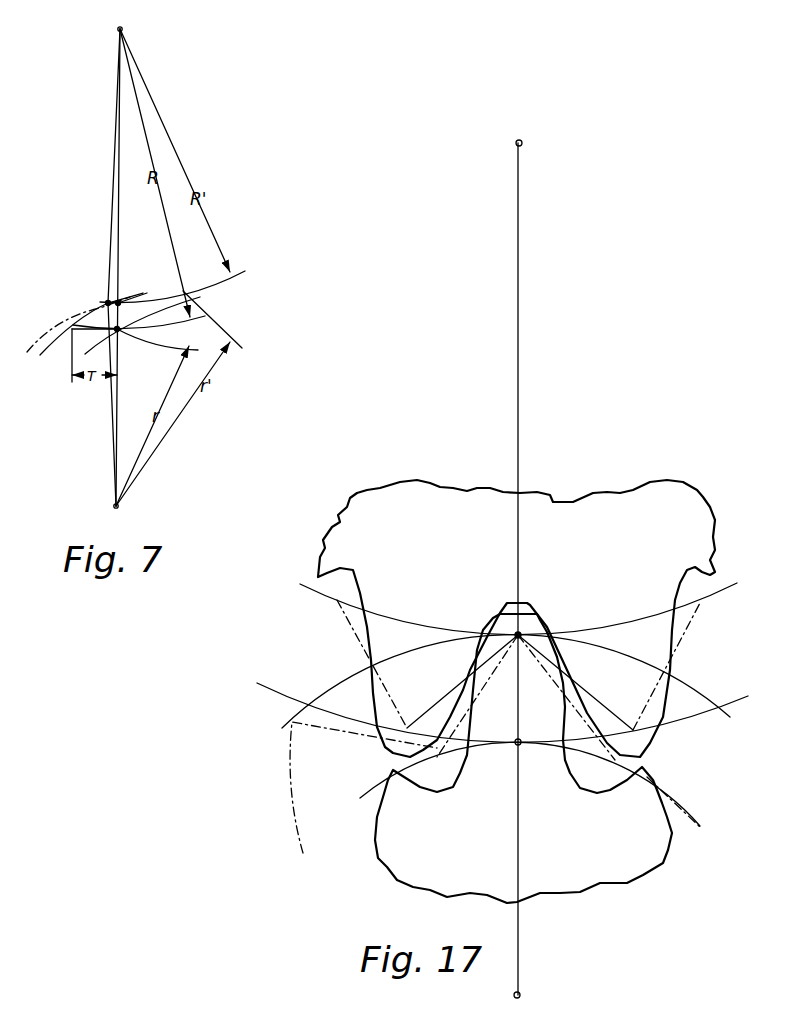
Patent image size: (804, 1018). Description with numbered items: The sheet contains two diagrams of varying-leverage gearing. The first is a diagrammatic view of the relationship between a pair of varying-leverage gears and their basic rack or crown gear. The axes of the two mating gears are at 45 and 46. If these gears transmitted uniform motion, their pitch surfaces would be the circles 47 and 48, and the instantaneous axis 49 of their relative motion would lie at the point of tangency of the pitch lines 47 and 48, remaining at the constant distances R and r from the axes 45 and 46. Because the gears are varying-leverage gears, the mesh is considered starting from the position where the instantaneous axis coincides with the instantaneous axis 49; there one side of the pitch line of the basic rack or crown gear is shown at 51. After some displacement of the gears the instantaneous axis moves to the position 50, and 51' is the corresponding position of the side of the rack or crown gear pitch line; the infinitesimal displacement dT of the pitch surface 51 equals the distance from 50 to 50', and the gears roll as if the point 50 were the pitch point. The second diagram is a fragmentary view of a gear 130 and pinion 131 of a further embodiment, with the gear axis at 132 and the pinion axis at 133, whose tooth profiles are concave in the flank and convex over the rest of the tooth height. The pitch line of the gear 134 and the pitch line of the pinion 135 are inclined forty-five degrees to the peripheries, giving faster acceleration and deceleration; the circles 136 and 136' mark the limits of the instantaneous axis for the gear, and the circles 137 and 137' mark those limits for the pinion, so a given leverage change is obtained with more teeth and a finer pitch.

In FIG. 7, the axis of mating gear 45 is at (117, 29).
In FIG. 7, the axis of mating gear 46 is at (118, 506).
In FIG. 7, the pitch surface 47 is at (207, 317).
In FIG. 7, the pitch surface 48 is at (163, 336).
In FIG. 7, the instantaneous axis 49 is at (117, 329).
In FIG. 7, the instantaneous axis position 50 is at (134, 284).
In FIG. 7, the displaced point 50' is at (94, 291).
In FIG. 7, the side of pitch line of basic rack or crown gear 51 is at (142, 325).
In FIG. 7, the side of pitch line of basic rack or crown gear 51' is at (76, 345).
In FIG. 17, the gear 130 is at (662, 495).
In FIG. 17, the pinion 131 is at (590, 875).
In FIG. 17, the gear axis 132 is at (523, 143).
In FIG. 17, the pinion axis 133 is at (521, 997).
In FIG. 17, the pitch line of the gear 134 is at (352, 636).
In FIG. 17, the pitch line of the pinion 135 is at (288, 803).
In FIG. 17, the circle 136 is at (524, 609).
In FIG. 17, the circle 136' is at (507, 714).
In FIG. 17, the circle 137 is at (503, 808).
In FIG. 17, the circle 137' is at (513, 681).